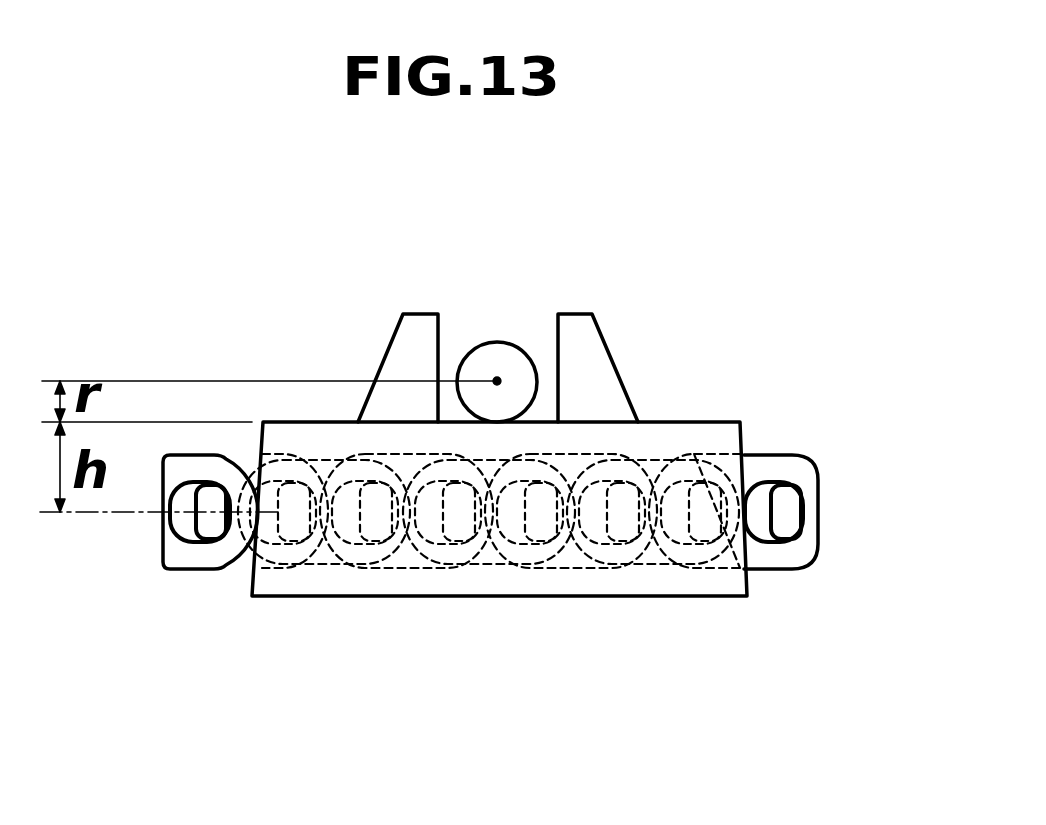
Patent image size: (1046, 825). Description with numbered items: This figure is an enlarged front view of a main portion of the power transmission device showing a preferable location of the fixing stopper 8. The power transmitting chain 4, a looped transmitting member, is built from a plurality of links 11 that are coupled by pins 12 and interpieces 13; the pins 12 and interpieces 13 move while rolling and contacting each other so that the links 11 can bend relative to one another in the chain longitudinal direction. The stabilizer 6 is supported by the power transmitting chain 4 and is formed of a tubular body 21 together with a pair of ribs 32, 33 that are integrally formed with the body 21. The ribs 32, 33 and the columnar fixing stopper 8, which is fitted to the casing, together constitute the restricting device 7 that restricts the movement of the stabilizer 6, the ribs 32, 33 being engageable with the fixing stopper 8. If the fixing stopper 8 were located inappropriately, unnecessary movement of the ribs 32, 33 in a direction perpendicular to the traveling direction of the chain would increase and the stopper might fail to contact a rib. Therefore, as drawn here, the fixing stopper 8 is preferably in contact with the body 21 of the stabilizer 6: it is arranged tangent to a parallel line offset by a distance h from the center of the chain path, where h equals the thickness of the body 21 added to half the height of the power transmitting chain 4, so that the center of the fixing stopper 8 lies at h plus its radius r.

The power transmitting chain 4 is at (490, 572).
The stabilizer 6 is at (557, 580).
The restricting device 7 is at (548, 329).
The fixing stopper 8 is at (500, 360).
The link 11 is at (387, 548).
The pin 12 is at (262, 552).
The interpiece 13 is at (297, 553).
The body 21 is at (713, 580).
The rib 32 is at (410, 338).
The rib 33 is at (645, 322).